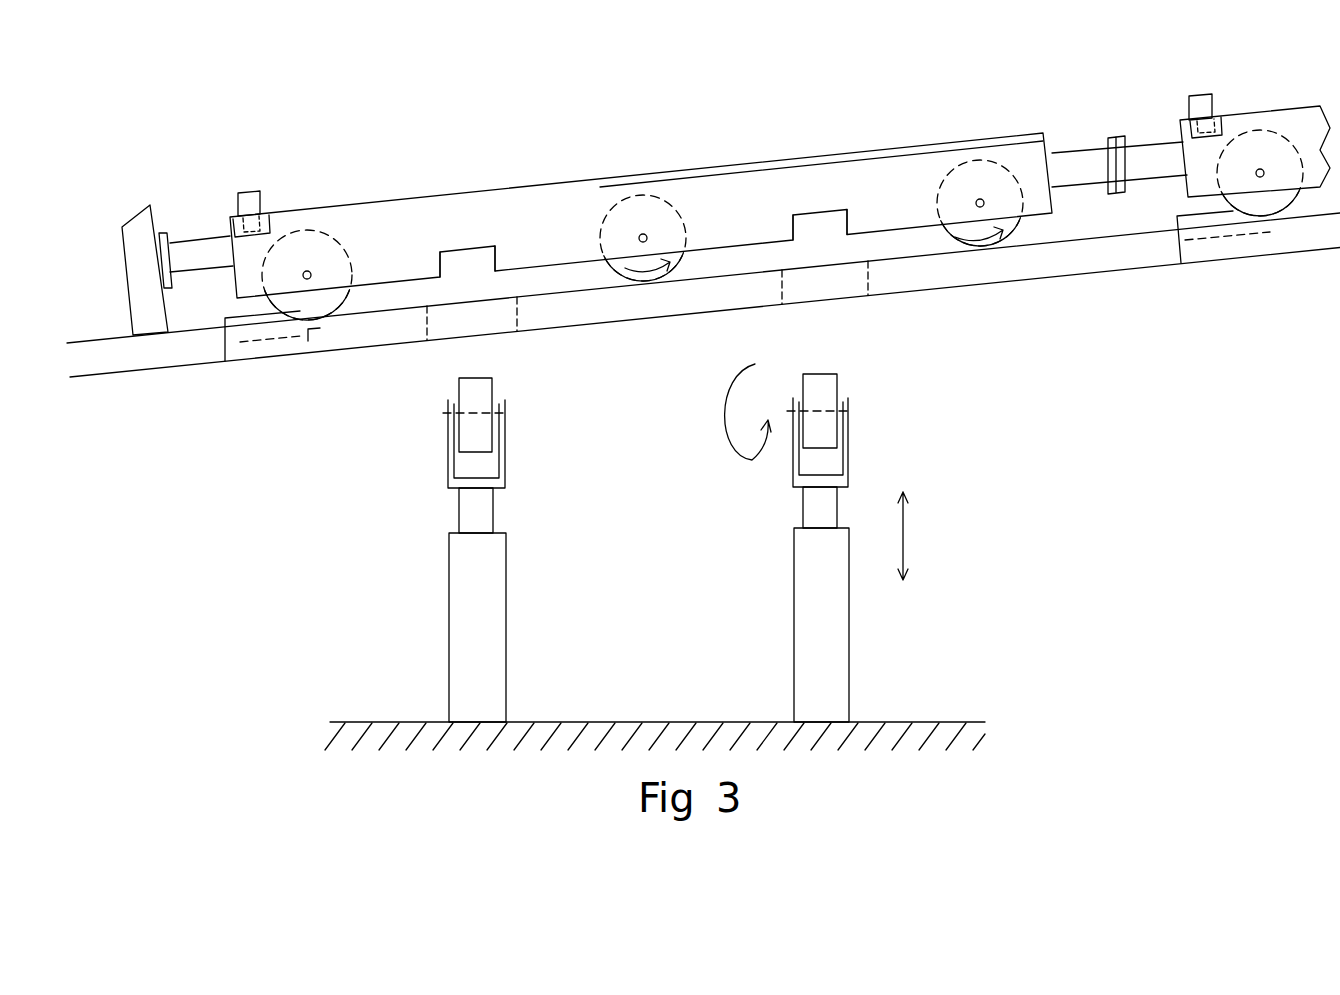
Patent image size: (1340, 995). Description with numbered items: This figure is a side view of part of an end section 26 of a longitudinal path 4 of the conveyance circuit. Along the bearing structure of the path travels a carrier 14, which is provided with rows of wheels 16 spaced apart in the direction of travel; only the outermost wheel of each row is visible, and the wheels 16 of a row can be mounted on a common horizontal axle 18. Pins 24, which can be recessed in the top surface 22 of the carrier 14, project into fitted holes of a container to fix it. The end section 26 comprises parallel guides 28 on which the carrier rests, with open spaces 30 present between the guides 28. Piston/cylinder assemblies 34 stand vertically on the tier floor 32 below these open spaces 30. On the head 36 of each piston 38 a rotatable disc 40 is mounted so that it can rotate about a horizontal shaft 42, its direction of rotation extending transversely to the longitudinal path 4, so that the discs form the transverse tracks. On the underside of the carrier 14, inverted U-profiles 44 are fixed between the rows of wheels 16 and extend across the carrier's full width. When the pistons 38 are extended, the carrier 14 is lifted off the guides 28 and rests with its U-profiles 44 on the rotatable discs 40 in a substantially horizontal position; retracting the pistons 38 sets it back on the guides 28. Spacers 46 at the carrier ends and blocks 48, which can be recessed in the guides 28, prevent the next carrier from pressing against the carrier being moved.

The longitudinal path 4 is at (1303, 247).
The carrier 14 is at (403, 202).
The wheels 16 is at (323, 320).
The horizontal axle 18 is at (307, 275).
The top surface 22 is at (583, 177).
The pins 24 is at (238, 192).
The end section 26 is at (939, 315).
The guides 28 is at (410, 347).
The open spaces 30 is at (520, 320).
The tier floor 32 is at (387, 722).
The piston/cylinder assemblies 34 is at (512, 637).
The head 36 is at (505, 487).
The piston 38 is at (495, 507).
The rotatable disc 40 is at (493, 388).
The horizontal shaft 42 is at (468, 415).
The inverted U-profiles 44 is at (458, 243).
The spacers 46 is at (1083, 150).
The blocks 48 is at (1173, 225).